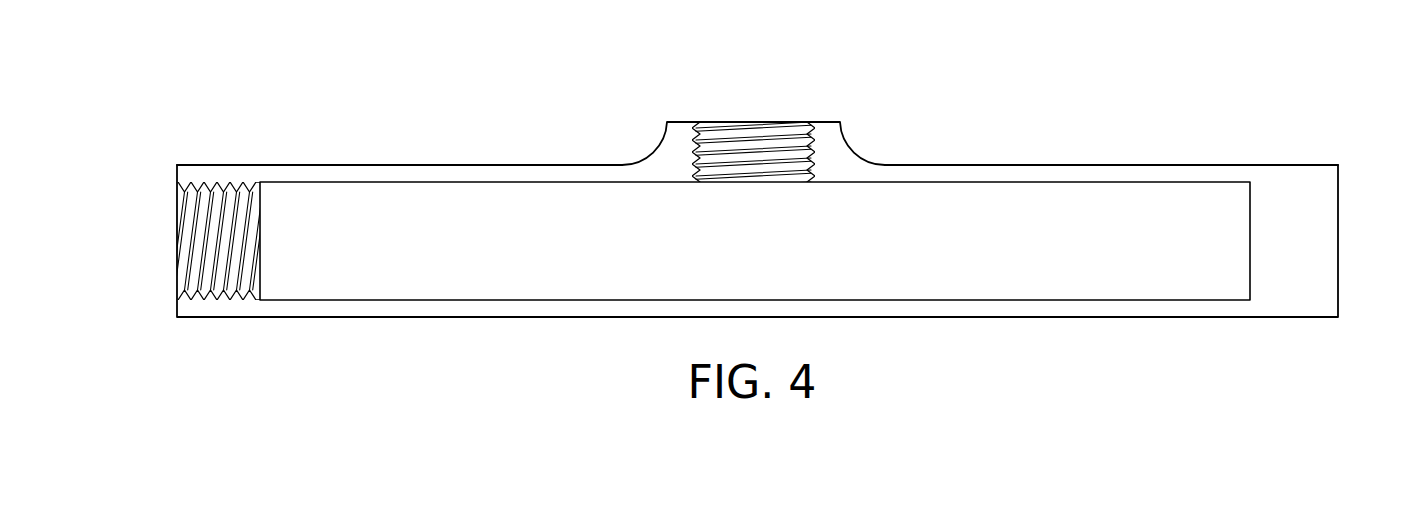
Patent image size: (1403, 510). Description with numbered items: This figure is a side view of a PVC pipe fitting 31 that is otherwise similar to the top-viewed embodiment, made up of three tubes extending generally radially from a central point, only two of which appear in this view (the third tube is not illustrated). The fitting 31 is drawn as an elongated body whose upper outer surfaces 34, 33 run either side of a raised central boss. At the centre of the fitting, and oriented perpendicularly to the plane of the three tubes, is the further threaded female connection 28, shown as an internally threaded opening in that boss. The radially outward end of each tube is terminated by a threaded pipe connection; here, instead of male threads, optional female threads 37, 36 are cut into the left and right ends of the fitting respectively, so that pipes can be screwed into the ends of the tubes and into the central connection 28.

The pipe coupling body 31 is at (586, 89).
The threaded female connection 28 is at (757, 130).
The outer surface 33 is at (1012, 164).
The outer surface 34 is at (492, 164).
The female threads 36 is at (1322, 246).
The female threads 37 is at (193, 246).